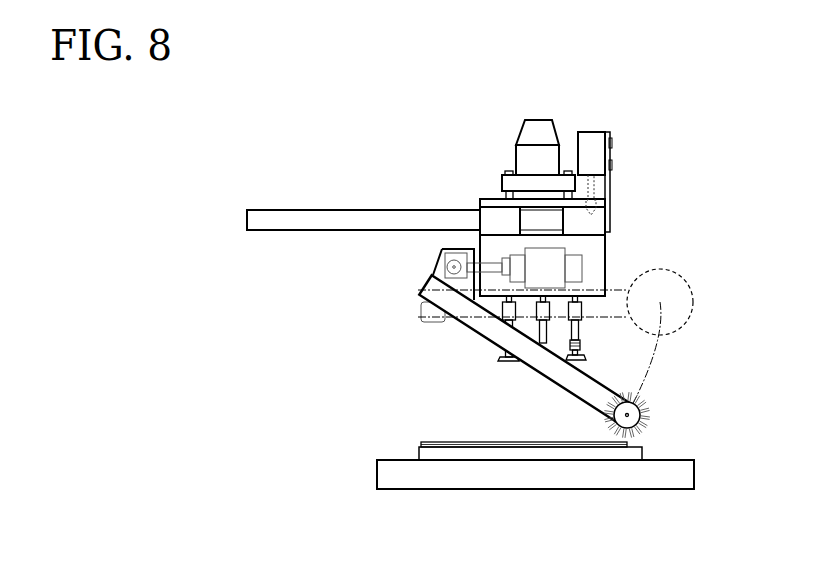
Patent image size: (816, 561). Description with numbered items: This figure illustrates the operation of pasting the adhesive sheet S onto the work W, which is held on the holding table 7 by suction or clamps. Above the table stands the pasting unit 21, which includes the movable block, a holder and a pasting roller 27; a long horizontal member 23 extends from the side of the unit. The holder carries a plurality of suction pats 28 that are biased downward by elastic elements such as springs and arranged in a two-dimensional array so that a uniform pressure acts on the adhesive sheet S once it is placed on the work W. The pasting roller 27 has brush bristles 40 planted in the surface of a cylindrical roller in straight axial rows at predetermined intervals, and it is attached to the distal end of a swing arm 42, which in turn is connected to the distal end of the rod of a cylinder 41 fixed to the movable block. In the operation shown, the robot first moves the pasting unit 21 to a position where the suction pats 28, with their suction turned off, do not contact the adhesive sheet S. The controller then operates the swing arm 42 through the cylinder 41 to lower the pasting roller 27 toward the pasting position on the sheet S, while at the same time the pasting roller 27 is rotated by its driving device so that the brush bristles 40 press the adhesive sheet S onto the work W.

The holding table 7 is at (377, 481).
The work W is at (419, 450).
The adhesive sheet S is at (446, 442).
The pasting unit 21 is at (612, 127).
The support arm 23 is at (389, 209).
The pasting roller 27 is at (673, 414).
The suction pats 28 is at (587, 357).
The brush bristles 40 is at (642, 423).
The cylinder 41 is at (580, 262).
The swing arm 42 is at (556, 388).